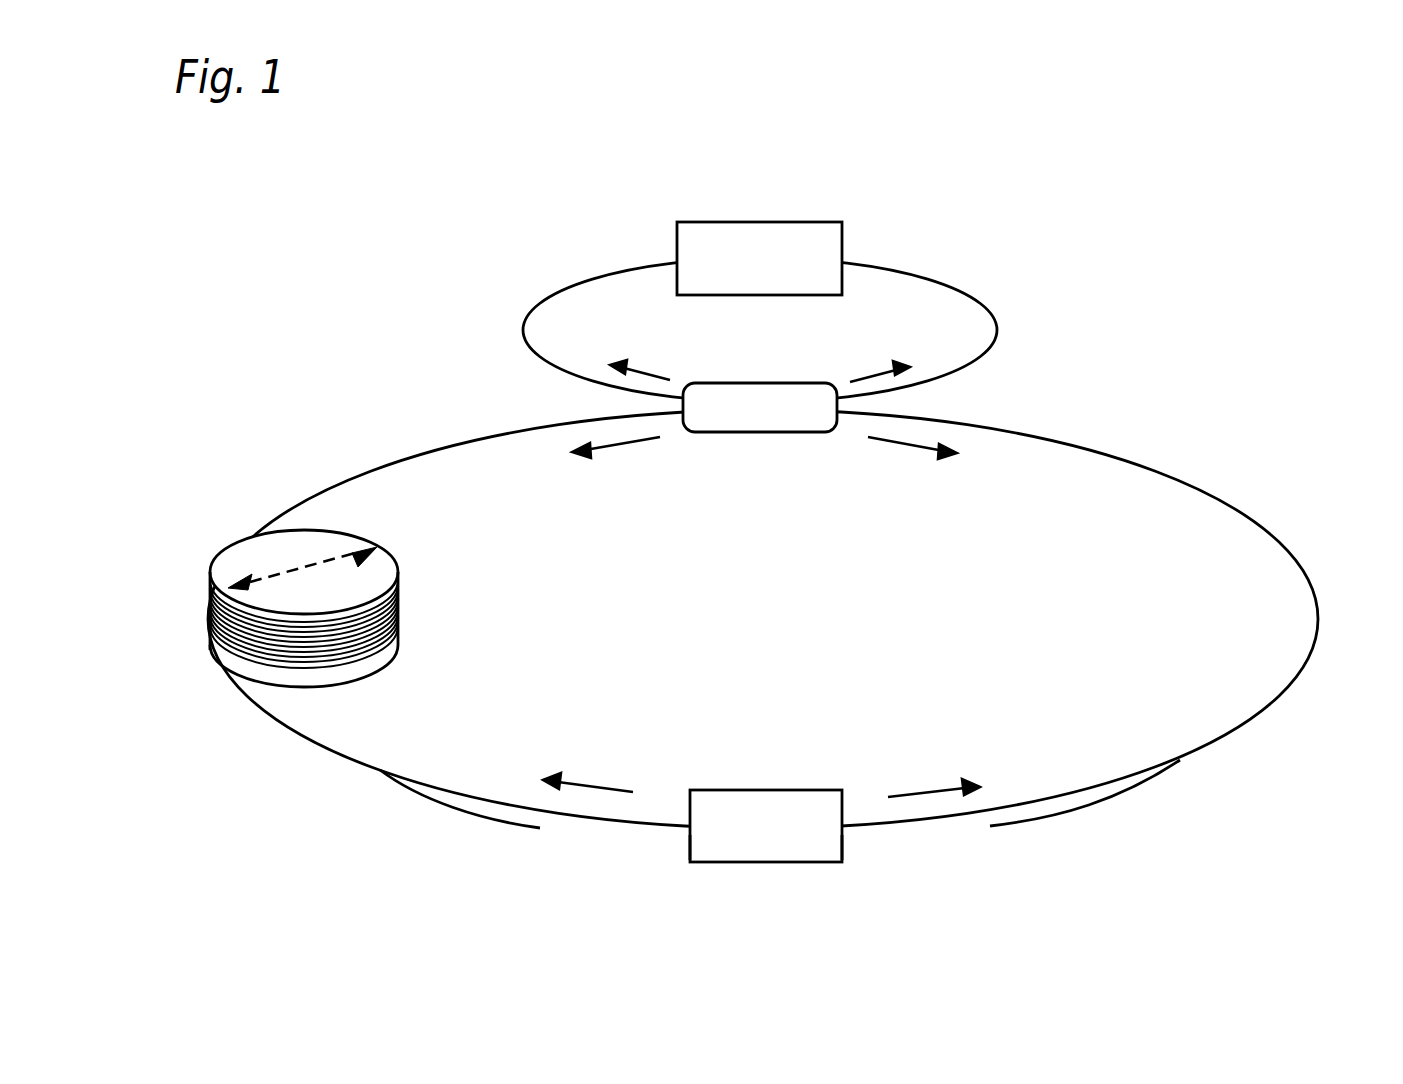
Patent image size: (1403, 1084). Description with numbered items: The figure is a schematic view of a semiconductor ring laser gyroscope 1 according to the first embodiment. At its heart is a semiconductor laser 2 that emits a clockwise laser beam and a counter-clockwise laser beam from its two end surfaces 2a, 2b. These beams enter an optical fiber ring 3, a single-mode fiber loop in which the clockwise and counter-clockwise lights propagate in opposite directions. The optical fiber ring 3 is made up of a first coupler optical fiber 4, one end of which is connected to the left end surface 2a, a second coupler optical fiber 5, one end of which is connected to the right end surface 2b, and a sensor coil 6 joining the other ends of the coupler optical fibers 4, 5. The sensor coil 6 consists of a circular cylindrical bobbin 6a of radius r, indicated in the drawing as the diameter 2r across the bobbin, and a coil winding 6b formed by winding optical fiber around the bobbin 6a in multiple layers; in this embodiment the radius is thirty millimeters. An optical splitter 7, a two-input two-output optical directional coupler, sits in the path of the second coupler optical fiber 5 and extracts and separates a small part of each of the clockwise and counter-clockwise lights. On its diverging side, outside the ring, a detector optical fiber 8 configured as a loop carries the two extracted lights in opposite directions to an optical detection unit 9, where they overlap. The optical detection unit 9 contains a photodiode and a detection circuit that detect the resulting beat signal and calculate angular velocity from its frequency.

The semiconductor ring laser gyroscope 1 is at (406, 248).
The semiconductor laser 2 is at (787, 790).
The left end surface 2a is at (690, 847).
The right end surface 2b is at (842, 847).
The coil diameter 2r is at (323, 563).
The optical fiber ring 3 is at (1206, 695).
The first coupler optical fiber 4 is at (443, 788).
The second coupler optical fiber 5 is at (1080, 790).
The sensor coil 6 is at (392, 577).
The bobbin 6a is at (285, 545).
The coil winding 6b is at (370, 647).
The optical splitter 7 is at (785, 433).
The detector optical fiber 8 is at (945, 283).
The optical detection unit 9 is at (795, 222).